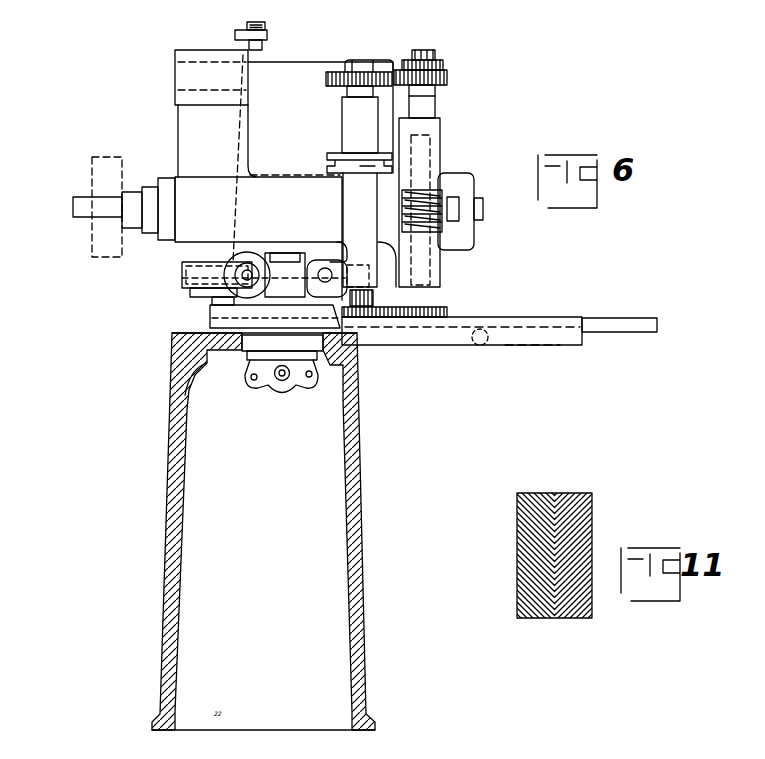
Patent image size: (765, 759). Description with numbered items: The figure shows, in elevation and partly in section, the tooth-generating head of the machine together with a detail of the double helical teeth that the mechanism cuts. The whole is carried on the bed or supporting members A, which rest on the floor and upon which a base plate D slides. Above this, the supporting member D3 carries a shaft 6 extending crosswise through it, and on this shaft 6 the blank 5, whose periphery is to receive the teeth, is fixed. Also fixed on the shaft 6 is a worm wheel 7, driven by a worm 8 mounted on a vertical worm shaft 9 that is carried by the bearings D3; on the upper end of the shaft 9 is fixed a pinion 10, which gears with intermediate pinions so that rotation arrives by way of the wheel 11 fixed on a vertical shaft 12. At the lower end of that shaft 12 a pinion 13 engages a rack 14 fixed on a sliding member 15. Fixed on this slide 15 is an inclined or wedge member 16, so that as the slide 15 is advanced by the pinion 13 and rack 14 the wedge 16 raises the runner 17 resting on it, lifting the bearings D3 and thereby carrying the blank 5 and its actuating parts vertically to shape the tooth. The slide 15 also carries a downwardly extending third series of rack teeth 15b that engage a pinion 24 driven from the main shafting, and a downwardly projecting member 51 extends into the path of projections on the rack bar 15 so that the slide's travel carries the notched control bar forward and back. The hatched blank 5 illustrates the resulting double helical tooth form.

In FIG. 6, the blank 5 is at (94, 156).
In FIG. 11, the blank 5 is at (578, 520).
In FIG. 6, the shaft 6 is at (72, 207).
In FIG. 6, the supporting member D3 is at (202, 122).
In FIG. 6, the runner 17 is at (228, 258).
In FIG. 6, the inclined or wedge member 16 is at (235, 306).
In FIG. 6, the bed or supporting members A is at (190, 482).
In FIG. 6, the base plate D is at (258, 345).
In FIG. 6, the downwardly projecting member 51 is at (288, 253).
In FIG. 6, the wheel 11 is at (345, 72).
In FIG. 6, the vertical shaft 12 is at (368, 61).
In FIG. 6, the vertical worm shaft 9 is at (422, 60).
In FIG. 6, the pinion 10 is at (447, 80).
In FIG. 6, the worm wheel 7 is at (427, 137).
In FIG. 6, the worm 8 is at (430, 210).
In FIG. 6, the pinion 13 is at (355, 272).
In FIG. 6, the rack 14 is at (445, 312).
In FIG. 6, the sliding member 15 is at (613, 316).
In FIG. 6, the pinion 24 is at (474, 345).
In FIG. 6, the rack teeth 15b is at (520, 343).